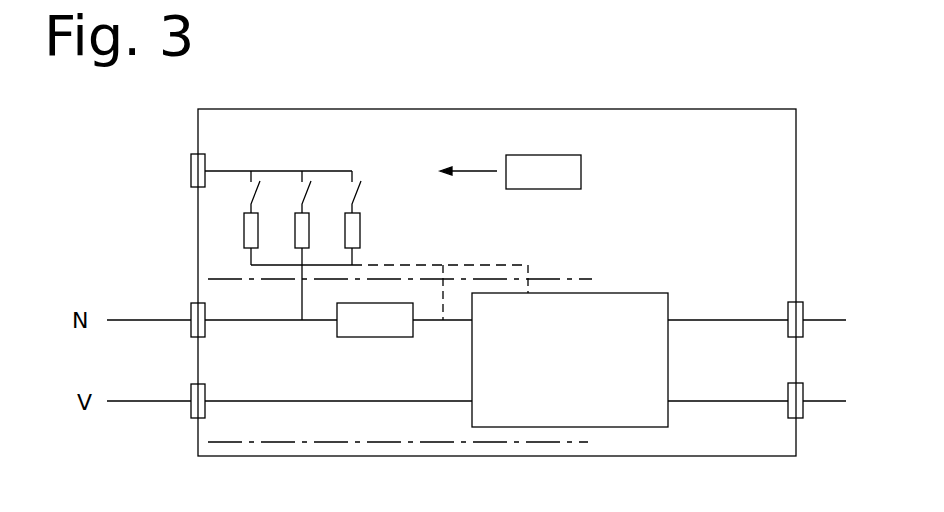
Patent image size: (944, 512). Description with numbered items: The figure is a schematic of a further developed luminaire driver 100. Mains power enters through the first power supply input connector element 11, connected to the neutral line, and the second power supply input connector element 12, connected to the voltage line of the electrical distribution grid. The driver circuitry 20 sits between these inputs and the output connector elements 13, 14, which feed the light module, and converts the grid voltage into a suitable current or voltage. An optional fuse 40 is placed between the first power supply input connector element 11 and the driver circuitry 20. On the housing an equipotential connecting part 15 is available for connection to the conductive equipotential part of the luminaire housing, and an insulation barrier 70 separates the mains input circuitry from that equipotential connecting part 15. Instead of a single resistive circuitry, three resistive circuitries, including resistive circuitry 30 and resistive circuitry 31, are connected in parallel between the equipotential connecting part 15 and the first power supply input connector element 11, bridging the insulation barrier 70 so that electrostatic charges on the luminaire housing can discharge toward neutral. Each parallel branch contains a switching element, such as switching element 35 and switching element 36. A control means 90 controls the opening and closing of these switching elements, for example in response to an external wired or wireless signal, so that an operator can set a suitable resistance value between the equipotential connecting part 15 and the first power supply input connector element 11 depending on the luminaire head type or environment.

The luminaire driver 100 is at (523, 98).
The equipotential connecting part 15 is at (198, 171).
The first power supply input connector element 11 is at (198, 330).
The second power supply input connector element 12 is at (198, 410).
The output connector element 13 is at (796, 311).
The output connector element 14 is at (796, 412).
The resistive circuitry 30 is at (248, 235).
The resistive circuitry 31 is at (356, 233).
The switching element 35 is at (254, 191).
The switching element 36 is at (356, 190).
The fuse 40 is at (346, 330).
The driver circuitry 20 is at (624, 293).
The insulation barrier 70 is at (488, 278).
The control means 90 is at (572, 163).